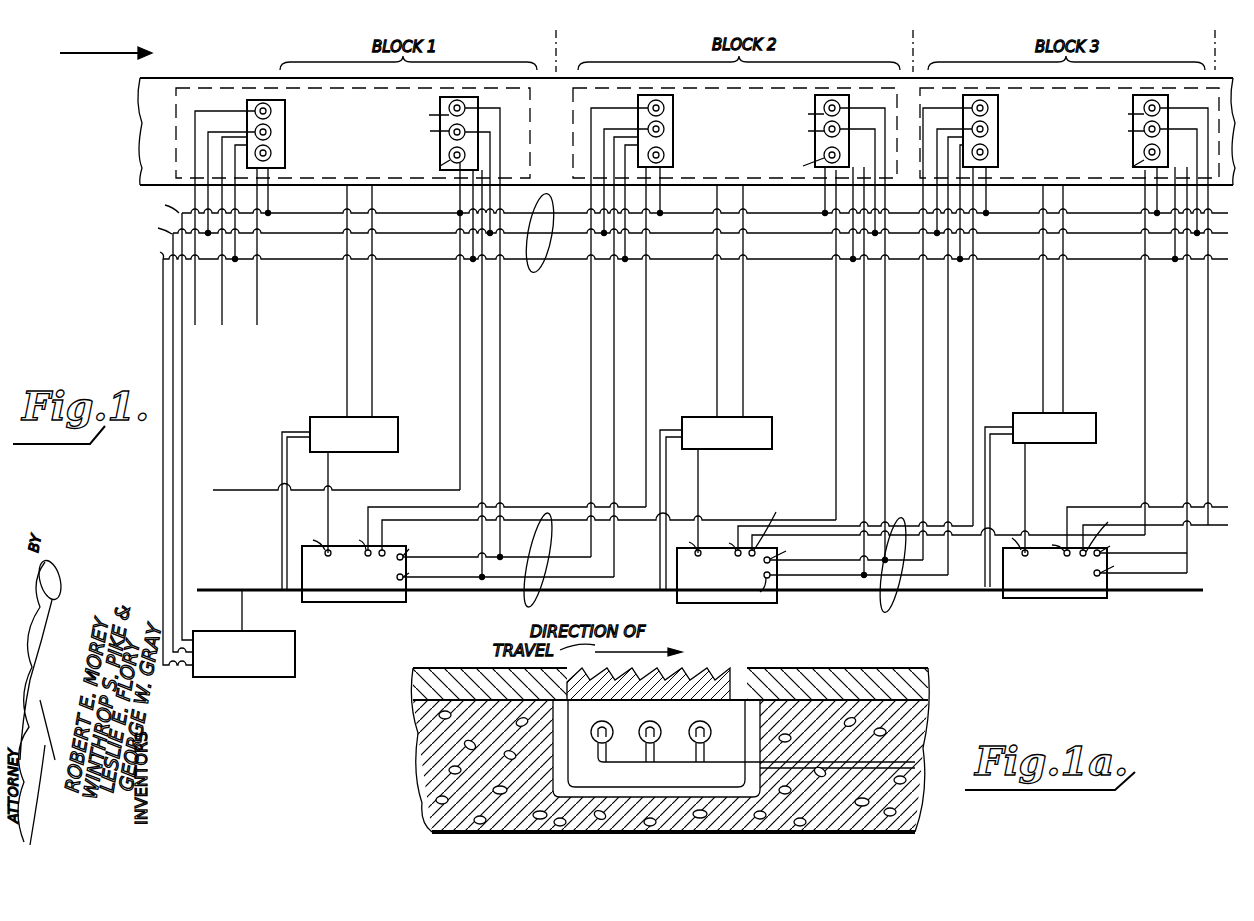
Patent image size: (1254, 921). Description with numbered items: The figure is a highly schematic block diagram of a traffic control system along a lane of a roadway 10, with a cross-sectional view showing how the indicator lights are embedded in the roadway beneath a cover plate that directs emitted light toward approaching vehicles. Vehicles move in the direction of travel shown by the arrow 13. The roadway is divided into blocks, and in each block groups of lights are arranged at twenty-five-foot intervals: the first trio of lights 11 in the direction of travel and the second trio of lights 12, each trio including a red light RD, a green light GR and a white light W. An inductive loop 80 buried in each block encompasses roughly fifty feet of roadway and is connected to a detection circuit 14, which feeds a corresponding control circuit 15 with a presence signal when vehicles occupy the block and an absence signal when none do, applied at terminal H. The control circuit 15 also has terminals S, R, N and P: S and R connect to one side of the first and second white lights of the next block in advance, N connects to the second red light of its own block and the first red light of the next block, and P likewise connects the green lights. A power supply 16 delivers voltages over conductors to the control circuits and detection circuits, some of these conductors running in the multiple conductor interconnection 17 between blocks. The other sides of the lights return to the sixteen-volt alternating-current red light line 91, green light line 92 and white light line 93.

The roadway 10 is at (209, 78).
The first trio of lights 11 is at (285, 156).
The second trio of lights 12 is at (440, 148).
The arrow 13 is at (117, 43).
The detection circuit 14 is at (382, 452).
The control circuit 15 is at (368, 602).
The power supply 16 is at (297, 652).
The multiple conductor interconnection 17 is at (535, 275).
The inductive loop 80 is at (175, 118).
The red light line 91 is at (306, 241).
The green light line 92 is at (306, 266).
The white light line 93 is at (306, 219).